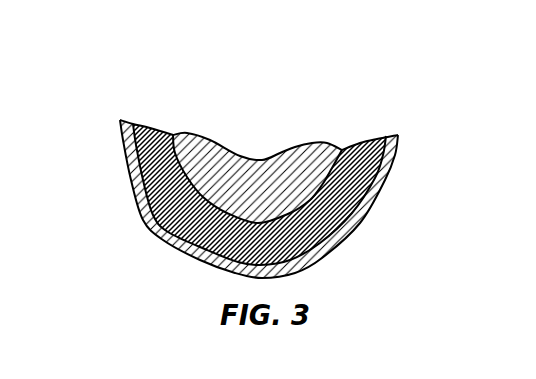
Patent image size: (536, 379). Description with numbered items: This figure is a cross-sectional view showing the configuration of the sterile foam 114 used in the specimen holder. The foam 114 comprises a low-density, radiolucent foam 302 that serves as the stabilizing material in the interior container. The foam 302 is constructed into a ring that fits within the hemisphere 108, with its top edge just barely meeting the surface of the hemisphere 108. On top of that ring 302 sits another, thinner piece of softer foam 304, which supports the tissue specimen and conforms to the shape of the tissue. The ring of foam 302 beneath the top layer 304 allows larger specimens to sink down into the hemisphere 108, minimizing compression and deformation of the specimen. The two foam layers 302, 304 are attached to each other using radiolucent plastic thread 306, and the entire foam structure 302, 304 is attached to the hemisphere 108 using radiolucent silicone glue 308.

The foam 114 is at (128, 71).
The hemisphere 108 is at (128, 165).
The low-density radiolucent foam 302 is at (165, 205).
The softer foam 304 is at (198, 135).
The radiolucent plastic thread 306 is at (342, 150).
The radiolucent silicone glue 308 is at (385, 137).